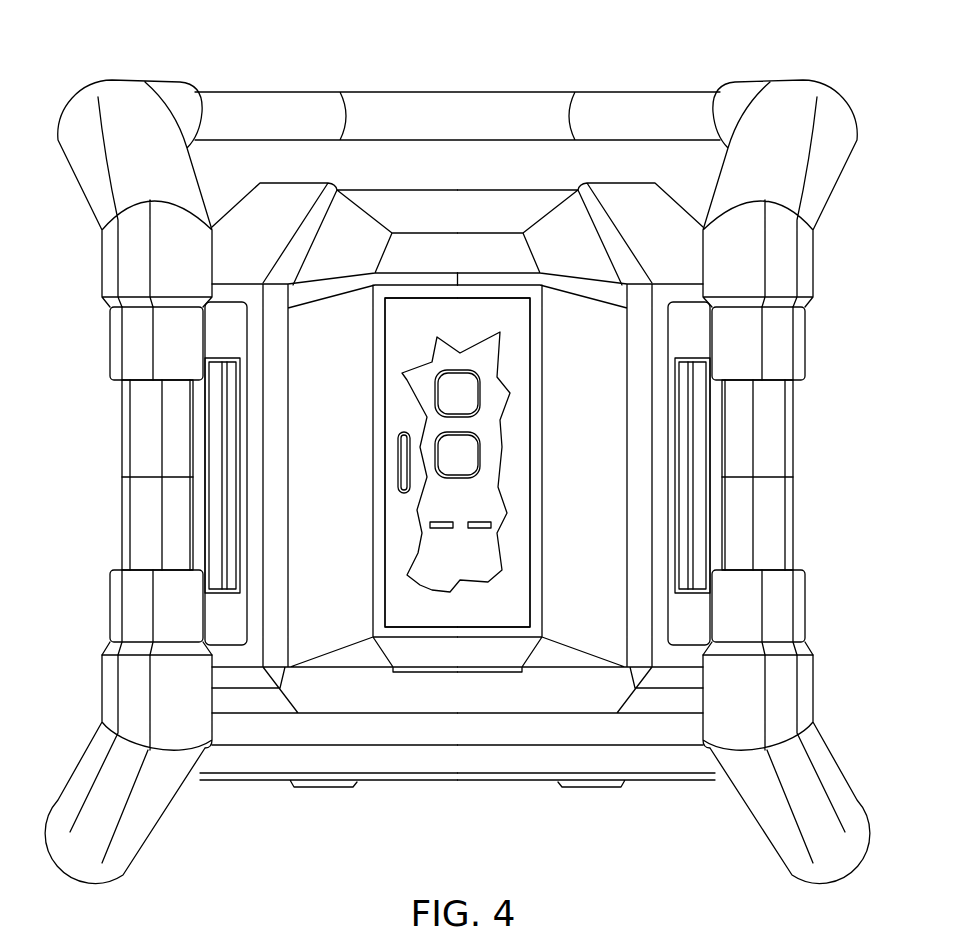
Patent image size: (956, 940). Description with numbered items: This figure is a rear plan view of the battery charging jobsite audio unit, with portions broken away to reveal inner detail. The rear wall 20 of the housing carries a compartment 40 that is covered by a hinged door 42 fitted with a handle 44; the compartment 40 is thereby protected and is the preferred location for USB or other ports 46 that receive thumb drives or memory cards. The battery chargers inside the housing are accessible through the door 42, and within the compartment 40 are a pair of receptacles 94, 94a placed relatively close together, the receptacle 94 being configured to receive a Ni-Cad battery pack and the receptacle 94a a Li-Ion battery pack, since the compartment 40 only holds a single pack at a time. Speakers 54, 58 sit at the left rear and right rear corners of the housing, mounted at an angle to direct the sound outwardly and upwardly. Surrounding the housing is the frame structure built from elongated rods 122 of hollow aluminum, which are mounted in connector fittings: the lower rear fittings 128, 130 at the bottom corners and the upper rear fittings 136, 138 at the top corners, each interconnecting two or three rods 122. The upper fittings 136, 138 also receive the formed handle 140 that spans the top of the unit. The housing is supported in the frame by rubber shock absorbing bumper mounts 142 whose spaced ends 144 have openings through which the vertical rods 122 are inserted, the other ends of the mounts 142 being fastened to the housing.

The rear wall 20 is at (583, 635).
The compartment 40 is at (424, 563).
The hinged door 42 is at (507, 617).
The handle 44 is at (400, 472).
The ports 46 is at (443, 530).
The speaker 54 is at (628, 197).
The speaker 58 is at (283, 197).
The receptacle 94 is at (437, 395).
The receptacle 94a is at (467, 458).
The elongated rods 122 is at (137, 463).
The lower rear fitting 128 is at (767, 847).
The lower rear fitting 130 is at (135, 860).
The upper rear fitting 136 is at (790, 90).
The upper rear fitting 138 is at (123, 88).
The handle 140 is at (597, 80).
The shock absorbing bumper mounts 142 is at (213, 447).
The spaced ends 144 is at (133, 342).